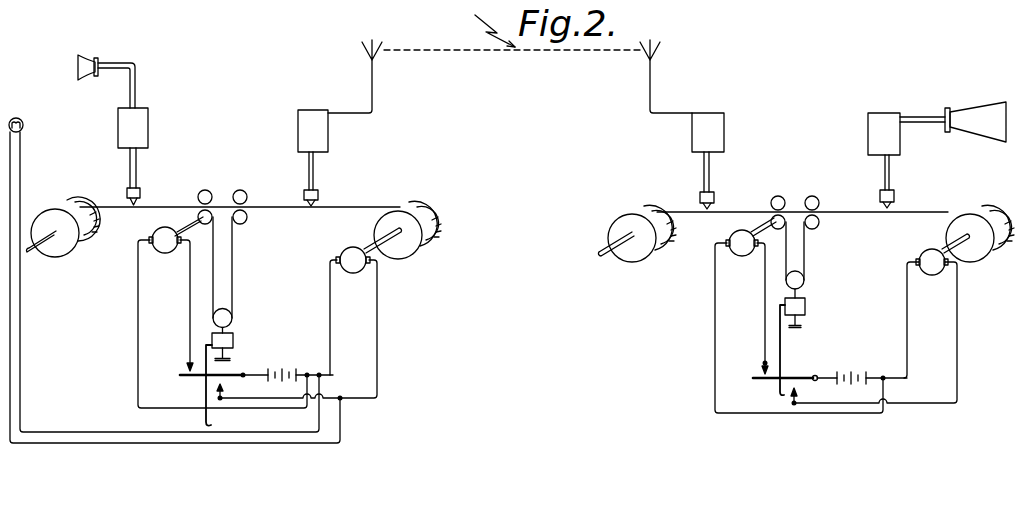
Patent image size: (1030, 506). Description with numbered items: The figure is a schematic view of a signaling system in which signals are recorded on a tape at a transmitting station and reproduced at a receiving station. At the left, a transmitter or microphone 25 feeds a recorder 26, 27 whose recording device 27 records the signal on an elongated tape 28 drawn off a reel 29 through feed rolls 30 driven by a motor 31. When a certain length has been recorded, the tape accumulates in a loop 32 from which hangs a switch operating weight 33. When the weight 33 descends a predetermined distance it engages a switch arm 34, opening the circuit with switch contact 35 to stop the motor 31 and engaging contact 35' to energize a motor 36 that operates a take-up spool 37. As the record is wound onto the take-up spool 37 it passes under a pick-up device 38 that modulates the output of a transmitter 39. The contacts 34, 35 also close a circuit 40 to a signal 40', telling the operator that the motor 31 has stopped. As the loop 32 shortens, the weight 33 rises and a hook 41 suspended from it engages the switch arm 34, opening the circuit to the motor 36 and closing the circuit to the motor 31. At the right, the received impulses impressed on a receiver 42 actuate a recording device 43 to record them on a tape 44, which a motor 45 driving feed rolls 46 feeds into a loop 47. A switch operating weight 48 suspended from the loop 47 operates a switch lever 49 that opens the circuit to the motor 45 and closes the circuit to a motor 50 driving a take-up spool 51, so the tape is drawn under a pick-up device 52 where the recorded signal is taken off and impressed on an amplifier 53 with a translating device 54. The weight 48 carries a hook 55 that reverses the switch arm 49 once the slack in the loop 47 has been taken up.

The transmitter or microphone 25 is at (97, 63).
The recorder 26 is at (148, 125).
The recording device 27 is at (142, 193).
The elongated tape 28 is at (118, 207).
The reel 29 is at (70, 255).
The feed rolls 30 is at (206, 190).
The motor 31 is at (165, 253).
The loop 32 is at (233, 275).
The switch operating weight 33 is at (233, 340).
The switch arm 34 is at (190, 378).
The switch contact 35 is at (166, 359).
The contact 35' is at (236, 391).
The motor 36 is at (352, 272).
The take-up spool 37 is at (407, 252).
The pick-up device 38 is at (318, 197).
The transmitter 39 is at (328, 133).
The circuit 40 is at (175, 287).
The signal 40' is at (36, 125).
The hook 41 is at (203, 417).
The receiver 42 is at (720, 133).
The recording device 43 is at (714, 199).
The tape 44 is at (692, 213).
The motor 45 is at (742, 257).
The feed rolls 46 is at (792, 208).
The loop 47 is at (807, 262).
The switch operating weight 48 is at (805, 305).
The switch lever 49 is at (796, 376).
The motor 50 is at (930, 276).
The take-up spool 51 is at (985, 256).
The pick-up device 52 is at (897, 201).
The amplifier 53 is at (893, 144).
The translating device 54 is at (948, 111).
The hook 55 is at (784, 384).